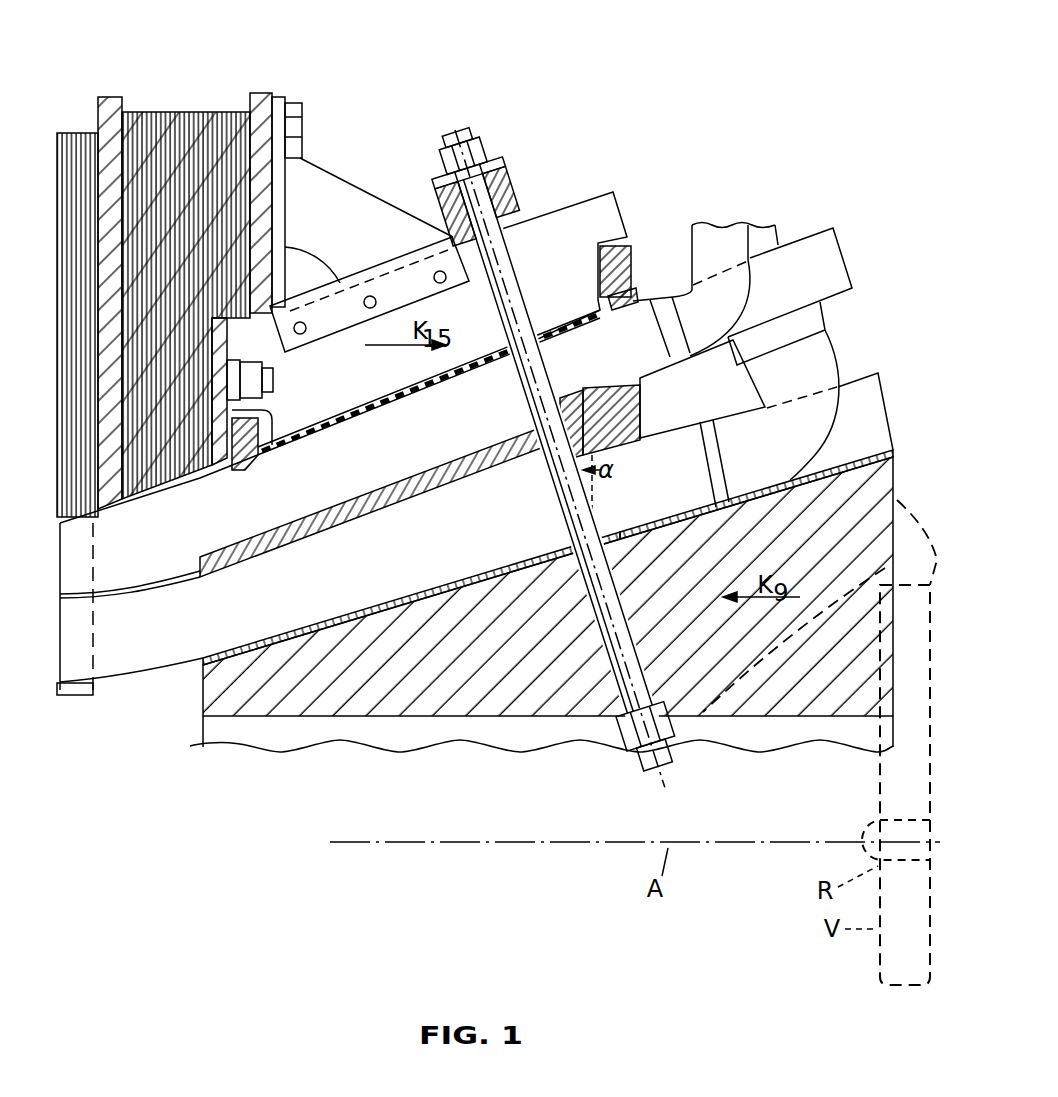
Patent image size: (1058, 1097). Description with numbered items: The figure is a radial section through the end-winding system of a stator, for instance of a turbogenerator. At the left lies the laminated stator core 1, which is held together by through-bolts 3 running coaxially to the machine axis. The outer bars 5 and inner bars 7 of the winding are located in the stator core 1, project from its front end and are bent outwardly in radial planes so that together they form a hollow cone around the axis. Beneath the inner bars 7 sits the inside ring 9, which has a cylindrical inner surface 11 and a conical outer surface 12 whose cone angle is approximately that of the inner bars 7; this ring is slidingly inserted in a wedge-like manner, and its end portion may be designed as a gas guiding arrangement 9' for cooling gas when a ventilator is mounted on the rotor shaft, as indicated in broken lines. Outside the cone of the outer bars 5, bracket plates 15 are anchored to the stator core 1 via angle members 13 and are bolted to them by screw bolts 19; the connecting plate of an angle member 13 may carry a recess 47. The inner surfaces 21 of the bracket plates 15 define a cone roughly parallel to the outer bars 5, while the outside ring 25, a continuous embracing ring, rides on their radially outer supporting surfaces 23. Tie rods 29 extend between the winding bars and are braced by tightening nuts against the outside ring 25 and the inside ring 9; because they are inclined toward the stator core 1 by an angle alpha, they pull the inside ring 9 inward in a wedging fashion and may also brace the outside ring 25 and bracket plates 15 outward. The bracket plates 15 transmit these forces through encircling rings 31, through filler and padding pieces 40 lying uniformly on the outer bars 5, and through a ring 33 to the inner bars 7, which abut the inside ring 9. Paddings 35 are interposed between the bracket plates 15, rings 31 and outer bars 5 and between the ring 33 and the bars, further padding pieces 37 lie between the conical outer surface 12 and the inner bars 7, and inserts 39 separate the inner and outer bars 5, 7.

The stator core 1 is at (180, 112).
The through-bolts 3 is at (276, 378).
The outer bars 5 is at (339, 479).
The inner bars 7 is at (344, 591).
The inside ring 9 is at (541, 627).
The gas guiding arrangement 9' is at (794, 675).
The cylindrical inner surface 11 is at (467, 718).
The conical outer surface 12 is at (452, 583).
The angle members 13 is at (335, 182).
The bracket plates 15 is at (563, 218).
The screw bolts 19 is at (371, 296).
The inner surfaces 21 is at (541, 320).
The radially outer supporting surfaces 23 is at (595, 195).
The outside ring 25 is at (490, 170).
The tie rods 29 is at (608, 612).
The rings 31 is at (630, 245).
The ring 33 is at (645, 398).
The paddings 35 is at (622, 315).
The padding pieces 37 is at (850, 478).
The inserts 39 is at (497, 462).
The filler and/or padding pieces 40 is at (430, 396).
The recess 47 is at (288, 286).